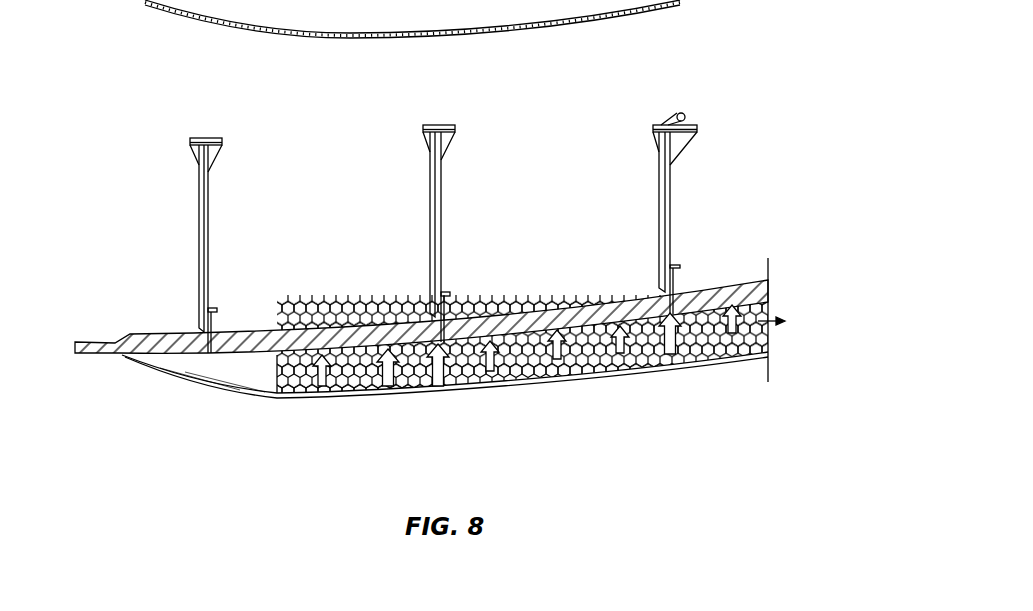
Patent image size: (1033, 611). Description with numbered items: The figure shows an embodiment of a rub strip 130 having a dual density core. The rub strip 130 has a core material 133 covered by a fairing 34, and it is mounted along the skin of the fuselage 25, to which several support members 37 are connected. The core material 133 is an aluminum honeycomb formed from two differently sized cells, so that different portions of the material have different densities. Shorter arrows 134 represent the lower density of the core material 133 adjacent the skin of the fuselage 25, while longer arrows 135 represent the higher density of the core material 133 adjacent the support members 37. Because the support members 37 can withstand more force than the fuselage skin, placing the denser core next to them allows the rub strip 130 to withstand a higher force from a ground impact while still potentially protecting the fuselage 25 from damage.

The fuselage 25 is at (344, 332).
The fairing 34 is at (224, 392).
The support members 37 is at (215, 311).
The rub strip 130 is at (430, 367).
The core material 133 is at (418, 386).
The shorter arrows 134 is at (322, 393).
The longer arrows 135 is at (438, 386).